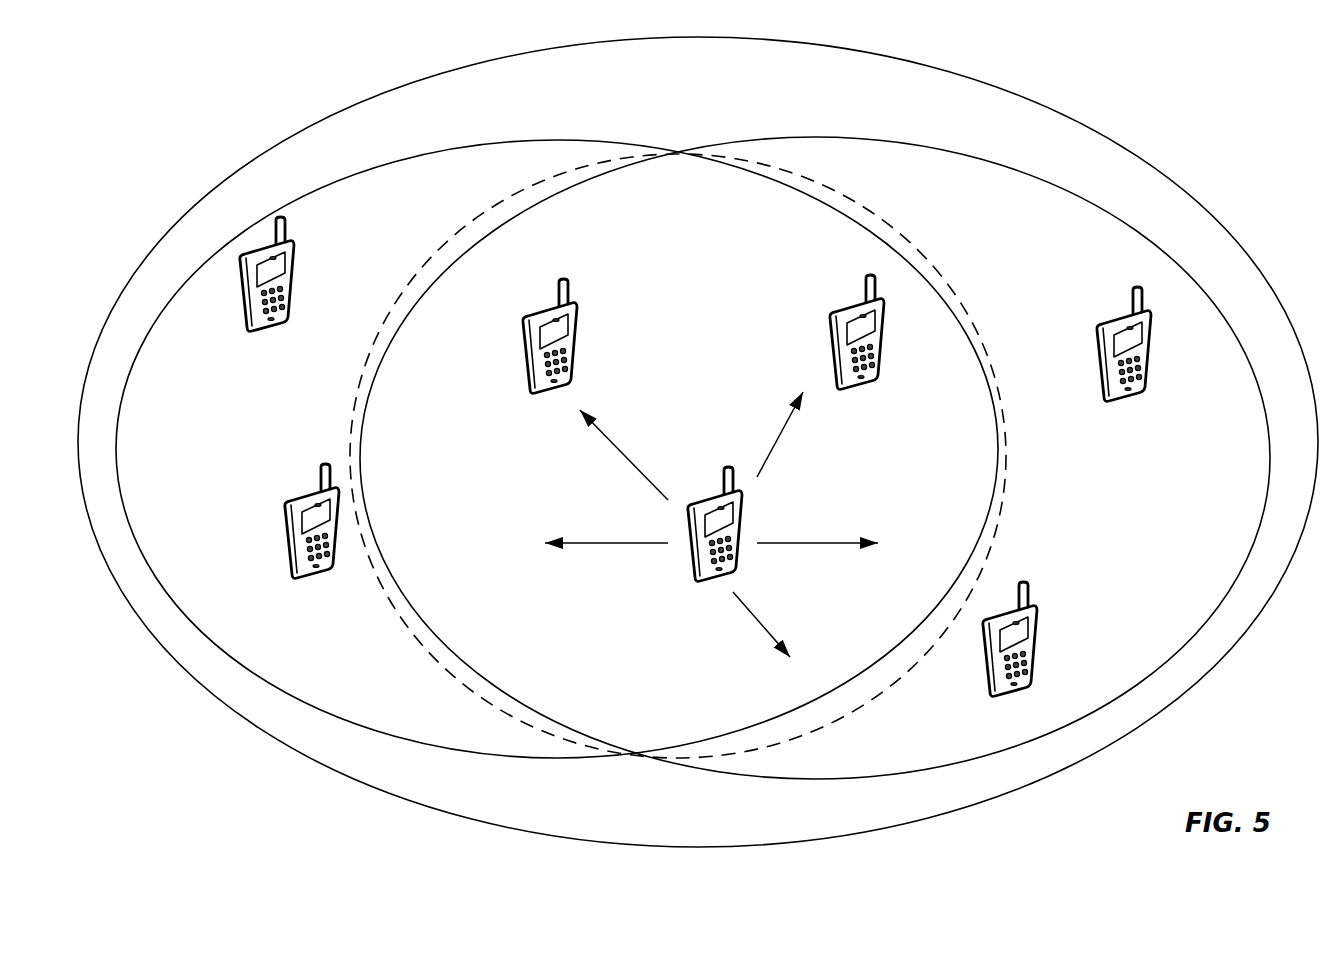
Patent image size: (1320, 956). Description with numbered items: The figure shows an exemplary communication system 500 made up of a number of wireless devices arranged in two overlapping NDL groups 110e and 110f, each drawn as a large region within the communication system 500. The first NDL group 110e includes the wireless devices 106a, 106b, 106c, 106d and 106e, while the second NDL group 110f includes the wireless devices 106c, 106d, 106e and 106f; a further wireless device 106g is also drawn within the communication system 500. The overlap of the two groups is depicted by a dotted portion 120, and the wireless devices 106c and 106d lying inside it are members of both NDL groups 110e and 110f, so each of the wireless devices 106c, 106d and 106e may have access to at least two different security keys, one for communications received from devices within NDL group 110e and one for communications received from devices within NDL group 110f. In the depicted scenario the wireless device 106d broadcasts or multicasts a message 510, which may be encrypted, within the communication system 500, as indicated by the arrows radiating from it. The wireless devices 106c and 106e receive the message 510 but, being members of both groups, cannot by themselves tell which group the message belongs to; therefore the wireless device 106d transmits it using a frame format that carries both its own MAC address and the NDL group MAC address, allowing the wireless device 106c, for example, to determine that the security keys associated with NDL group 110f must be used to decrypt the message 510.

The communication system 500 is at (1058, 110).
The NDL group 110e is at (470, 733).
The NDL group 110f is at (1082, 230).
The dotted portion 120 is at (826, 187).
The message 510 is at (783, 442).
The wireless device 106a is at (262, 335).
The wireless device 106b is at (283, 537).
The wireless device 106c is at (522, 330).
The wireless device 106d is at (688, 562).
The wireless device 106e is at (830, 365).
The wireless device 106f is at (985, 648).
The mobile station 106g is at (1098, 358).